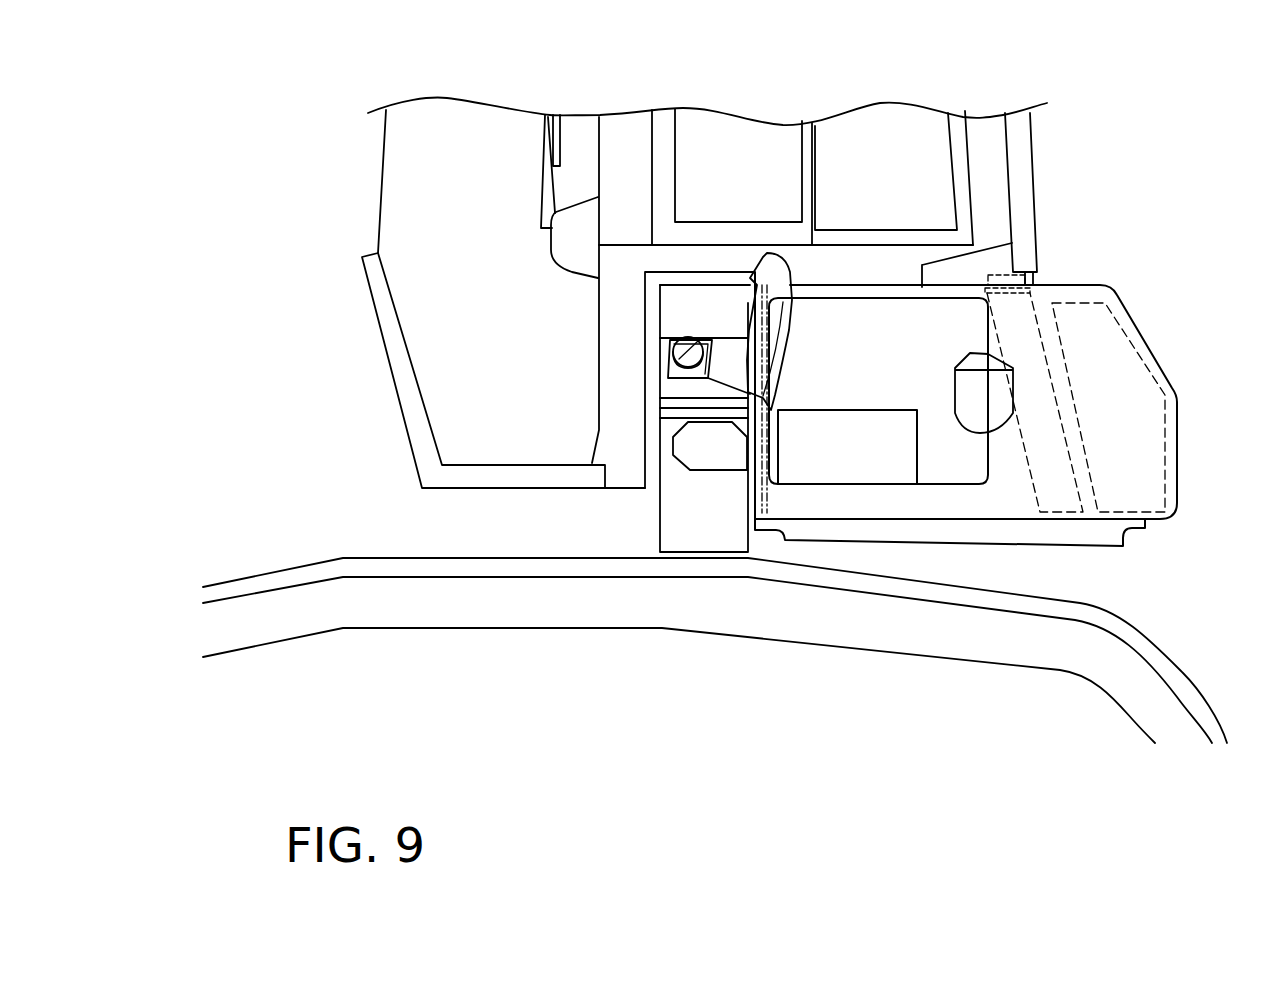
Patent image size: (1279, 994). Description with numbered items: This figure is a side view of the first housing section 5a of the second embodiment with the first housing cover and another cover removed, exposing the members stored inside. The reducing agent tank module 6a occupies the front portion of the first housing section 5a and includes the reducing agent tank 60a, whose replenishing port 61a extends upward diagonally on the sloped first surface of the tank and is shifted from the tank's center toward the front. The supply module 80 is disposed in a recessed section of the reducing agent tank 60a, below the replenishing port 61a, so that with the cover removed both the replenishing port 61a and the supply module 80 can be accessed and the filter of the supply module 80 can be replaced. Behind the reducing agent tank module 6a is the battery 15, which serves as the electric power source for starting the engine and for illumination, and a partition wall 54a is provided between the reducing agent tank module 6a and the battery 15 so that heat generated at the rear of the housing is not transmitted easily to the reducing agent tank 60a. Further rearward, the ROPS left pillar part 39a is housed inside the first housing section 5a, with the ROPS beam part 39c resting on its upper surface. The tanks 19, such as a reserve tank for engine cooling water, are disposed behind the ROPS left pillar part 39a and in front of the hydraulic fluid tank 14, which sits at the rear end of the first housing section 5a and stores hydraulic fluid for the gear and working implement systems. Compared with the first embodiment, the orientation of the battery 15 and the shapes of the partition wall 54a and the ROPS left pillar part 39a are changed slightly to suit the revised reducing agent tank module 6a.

The first housing section 5a is at (1127, 307).
The reducing agent tank module 6a is at (656, 503).
The hydraulic fluid tank 14 is at (1148, 347).
The battery 15 is at (843, 453).
The tanks 19 is at (970, 417).
The ROPS left pillar part 39a is at (1063, 518).
The ROPS beam part 39c is at (1043, 277).
The partition wall 54a is at (762, 513).
The reducing agent tank 60a is at (683, 492).
The replenishing port 61a is at (673, 358).
The supply module 80 is at (715, 452).